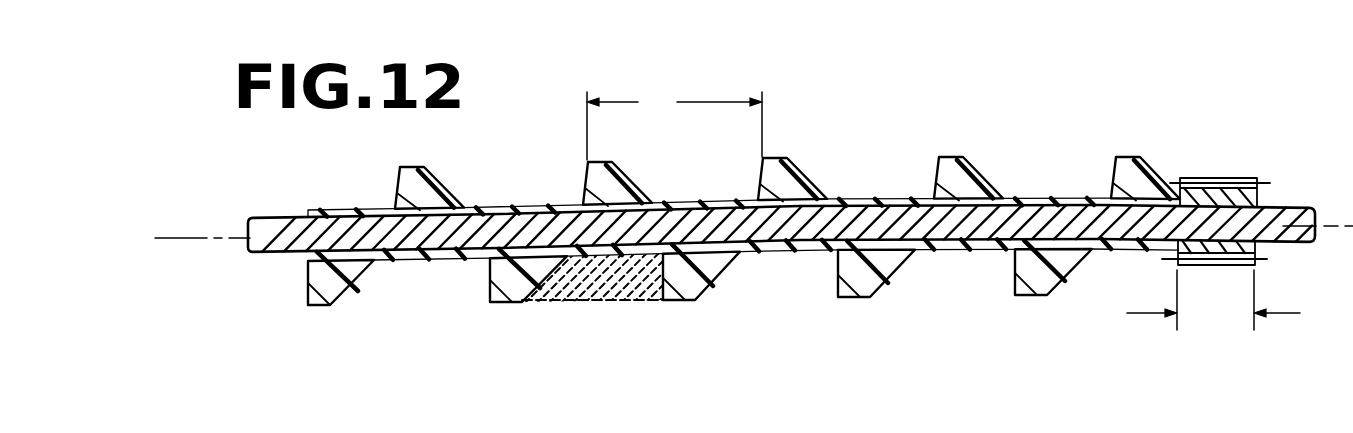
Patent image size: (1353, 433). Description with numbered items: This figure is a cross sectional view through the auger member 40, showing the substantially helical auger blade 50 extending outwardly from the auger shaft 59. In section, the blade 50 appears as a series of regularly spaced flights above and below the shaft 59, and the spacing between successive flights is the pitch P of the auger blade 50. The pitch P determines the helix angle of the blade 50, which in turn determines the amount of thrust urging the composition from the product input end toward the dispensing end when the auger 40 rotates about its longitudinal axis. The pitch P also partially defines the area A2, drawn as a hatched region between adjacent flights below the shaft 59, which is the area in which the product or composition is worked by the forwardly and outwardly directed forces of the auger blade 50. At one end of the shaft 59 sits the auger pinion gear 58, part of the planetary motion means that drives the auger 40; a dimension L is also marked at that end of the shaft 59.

The auger shaft 59 is at (278, 252).
The auger blade 50 is at (812, 183).
The auger member 40 is at (1016, 275).
The auger pinion gear 58 is at (1240, 178).
The area A2 is at (591, 275).
The pitch P is at (674, 123).
The collar length dimension L is at (1213, 301).